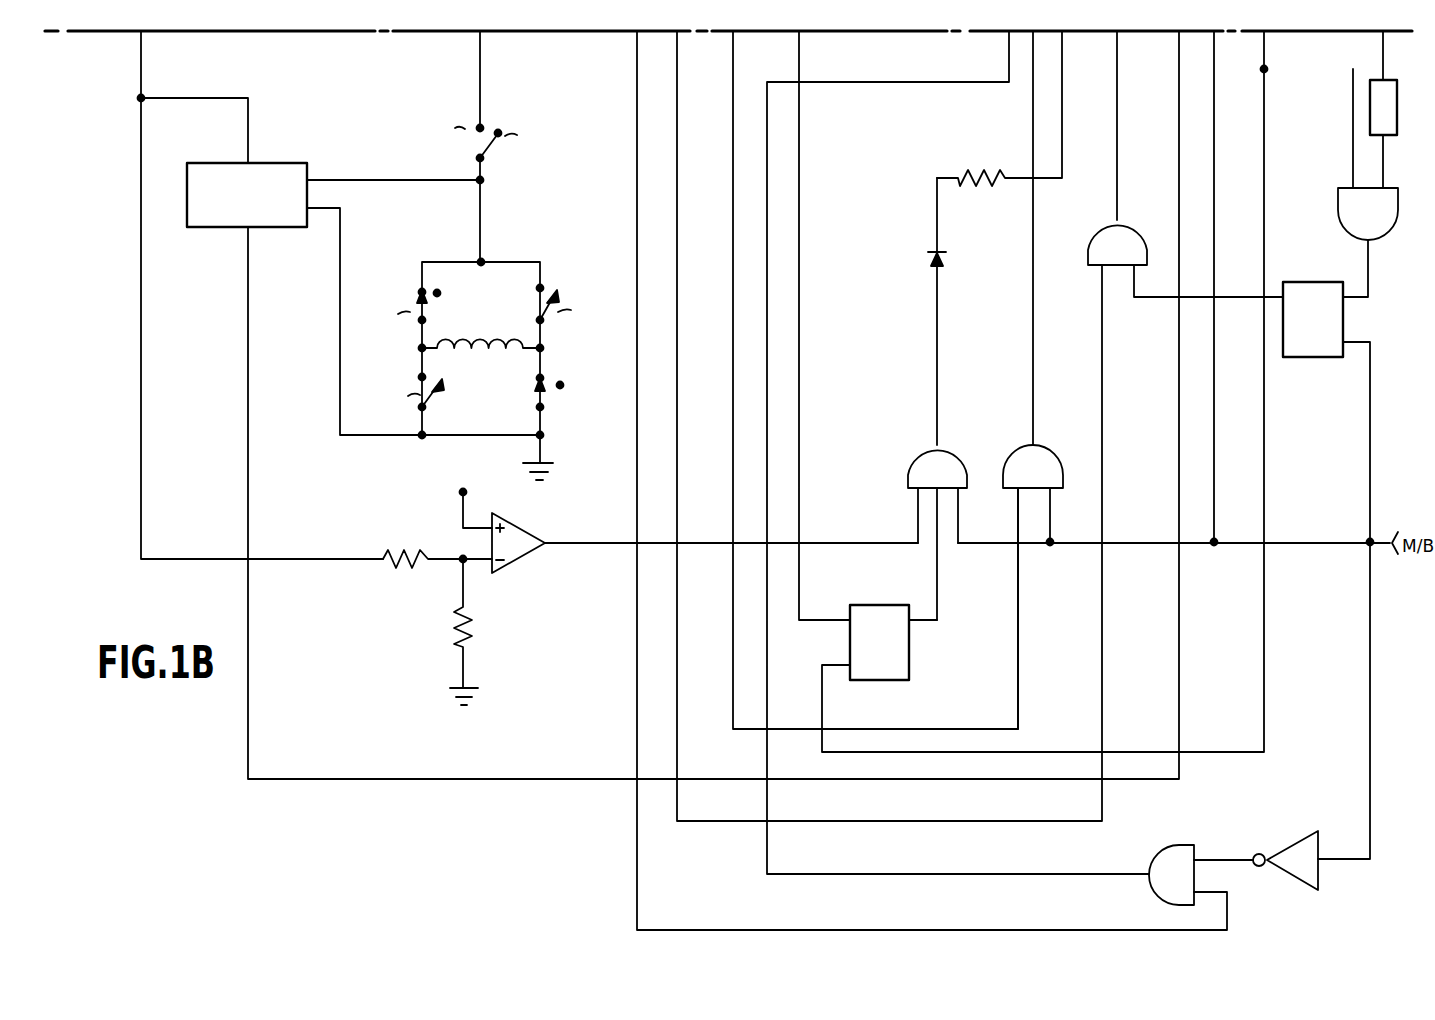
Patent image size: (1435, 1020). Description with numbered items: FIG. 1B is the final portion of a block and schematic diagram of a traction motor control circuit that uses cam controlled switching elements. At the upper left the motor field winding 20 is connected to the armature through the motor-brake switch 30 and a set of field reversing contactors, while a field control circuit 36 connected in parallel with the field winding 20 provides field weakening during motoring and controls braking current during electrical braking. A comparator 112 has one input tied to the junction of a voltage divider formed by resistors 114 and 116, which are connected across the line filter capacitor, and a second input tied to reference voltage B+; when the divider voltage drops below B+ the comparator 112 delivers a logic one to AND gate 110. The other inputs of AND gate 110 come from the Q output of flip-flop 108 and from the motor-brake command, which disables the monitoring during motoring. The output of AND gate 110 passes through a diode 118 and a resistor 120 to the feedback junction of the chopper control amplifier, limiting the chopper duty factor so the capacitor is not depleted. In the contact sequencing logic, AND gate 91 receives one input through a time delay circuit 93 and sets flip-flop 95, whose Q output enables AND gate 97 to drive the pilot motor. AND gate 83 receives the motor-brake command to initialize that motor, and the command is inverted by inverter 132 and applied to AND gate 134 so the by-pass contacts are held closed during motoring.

The field winding 20 is at (498, 335).
The motor-brake switch 30 is at (493, 146).
The field control circuit 36 is at (299, 160).
The AND gate 83 is at (1064, 454).
The AND gate 91 is at (1334, 201).
The time delay circuit 93 is at (1402, 94).
The flip-flop 95 is at (1318, 280).
The AND gate 97 is at (1147, 230).
The flip-flop 108 is at (892, 604).
The AND gate 110 is at (923, 446).
The comparator 112 is at (538, 534).
The resistor 114 is at (482, 621).
The resistor 116 is at (414, 549).
The diode 118 is at (924, 262).
The resistor 120 is at (986, 166).
The inverter 132 is at (1294, 834).
The AND gate 134 is at (1187, 845).